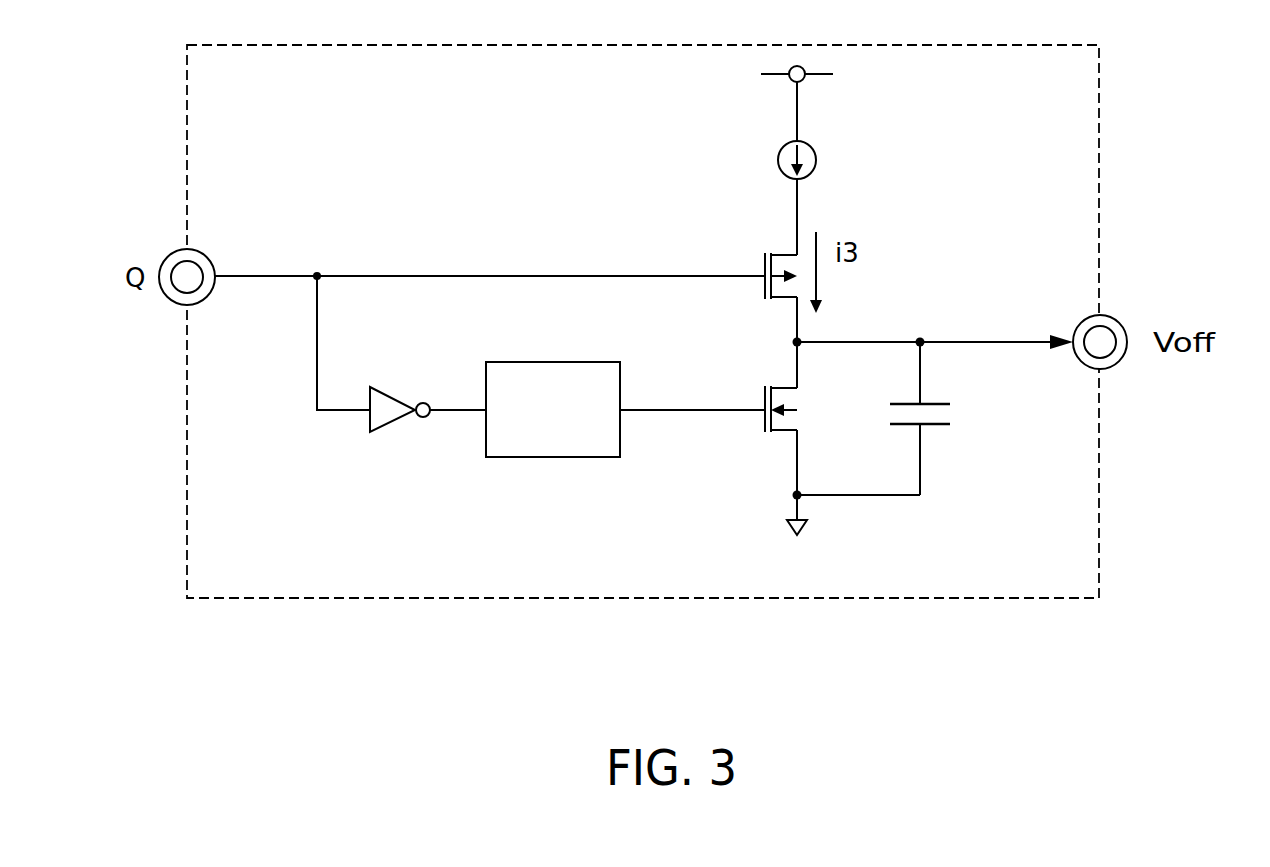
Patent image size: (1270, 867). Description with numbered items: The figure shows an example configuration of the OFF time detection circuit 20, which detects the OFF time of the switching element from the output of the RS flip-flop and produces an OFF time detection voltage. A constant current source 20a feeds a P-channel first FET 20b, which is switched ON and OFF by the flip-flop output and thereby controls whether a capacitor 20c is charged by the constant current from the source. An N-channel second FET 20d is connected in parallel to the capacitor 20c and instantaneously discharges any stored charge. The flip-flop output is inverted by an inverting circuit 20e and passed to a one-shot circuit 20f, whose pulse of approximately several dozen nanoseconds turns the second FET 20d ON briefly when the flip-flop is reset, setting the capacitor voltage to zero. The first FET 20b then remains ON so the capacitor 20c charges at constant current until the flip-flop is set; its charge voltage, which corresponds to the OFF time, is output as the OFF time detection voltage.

The OFF time detection circuit 20 is at (1037, 92).
The constant current source 20a is at (771, 150).
The first FET 20b is at (757, 262).
The capacitor 20c is at (937, 447).
The second FET 20d is at (775, 440).
The inverting circuit 20e is at (393, 427).
The one-shot circuit 20f is at (553, 458).